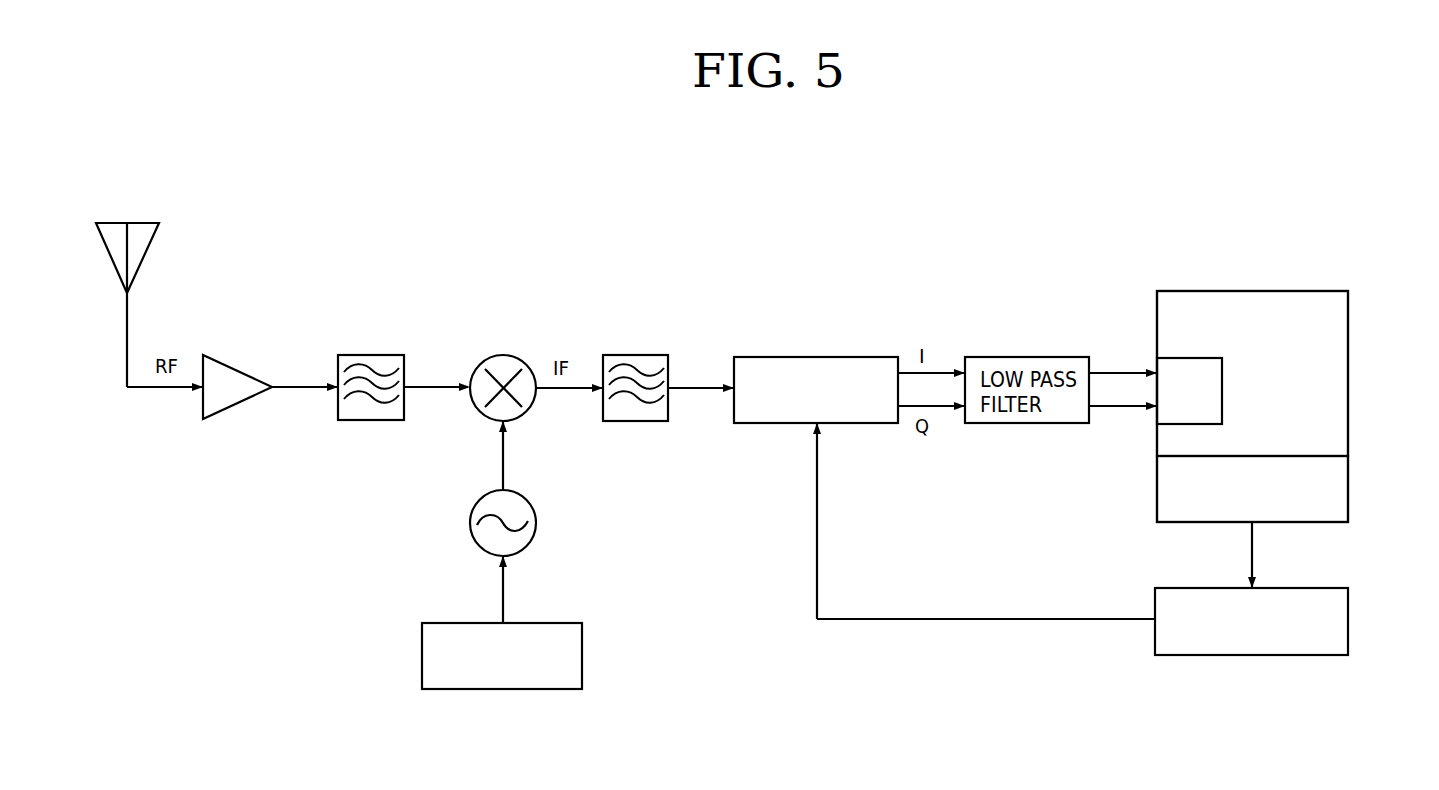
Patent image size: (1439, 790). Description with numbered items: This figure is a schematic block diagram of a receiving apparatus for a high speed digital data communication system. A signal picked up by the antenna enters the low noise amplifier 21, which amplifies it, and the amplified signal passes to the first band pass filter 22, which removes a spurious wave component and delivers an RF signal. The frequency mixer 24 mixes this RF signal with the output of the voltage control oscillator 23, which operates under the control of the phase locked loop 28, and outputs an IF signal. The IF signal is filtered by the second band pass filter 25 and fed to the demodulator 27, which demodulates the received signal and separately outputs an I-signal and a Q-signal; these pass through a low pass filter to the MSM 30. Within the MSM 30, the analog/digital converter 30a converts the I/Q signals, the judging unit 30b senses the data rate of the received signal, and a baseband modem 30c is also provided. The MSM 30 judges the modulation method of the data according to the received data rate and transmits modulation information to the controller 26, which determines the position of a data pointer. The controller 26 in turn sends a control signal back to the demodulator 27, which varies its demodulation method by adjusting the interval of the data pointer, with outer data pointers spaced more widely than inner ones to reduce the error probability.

The low noise amplifier 21 is at (240, 407).
The first band pass filter 22 is at (372, 420).
The voltage control oscillator 23 is at (537, 520).
The frequency mixer 24 is at (527, 413).
The second band pass filter 25 is at (637, 421).
The controller 26 is at (1348, 619).
The demodulator 27 is at (755, 423).
The phase locked loop 28 is at (582, 655).
The MSM 30 is at (1345, 275).
The analog/digital converter 30a is at (1187, 358).
The judging unit 30b is at (1157, 489).
The baseband modem 30c is at (1207, 291).